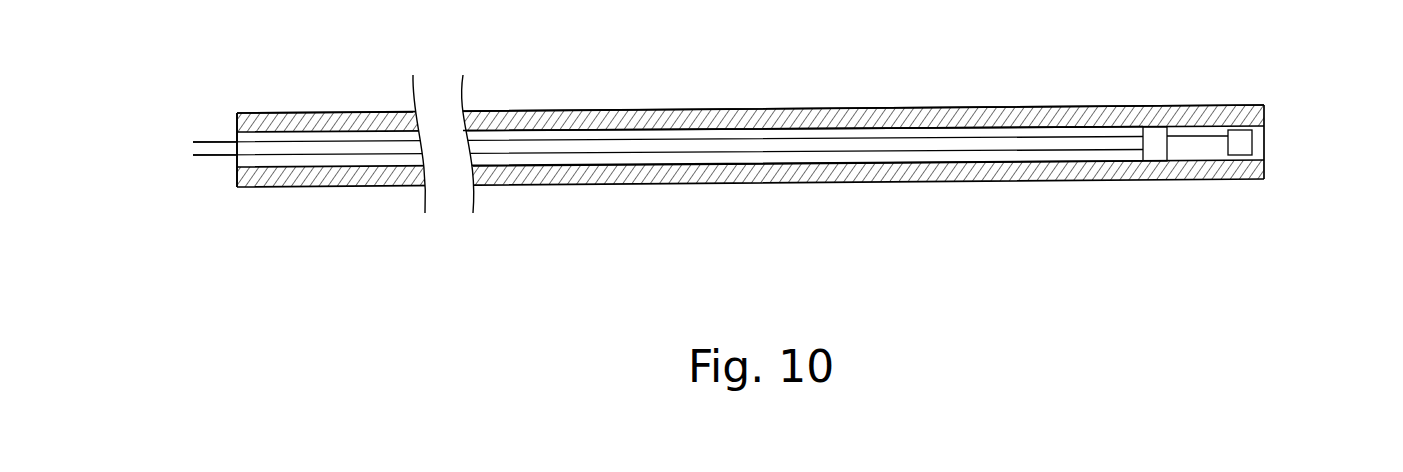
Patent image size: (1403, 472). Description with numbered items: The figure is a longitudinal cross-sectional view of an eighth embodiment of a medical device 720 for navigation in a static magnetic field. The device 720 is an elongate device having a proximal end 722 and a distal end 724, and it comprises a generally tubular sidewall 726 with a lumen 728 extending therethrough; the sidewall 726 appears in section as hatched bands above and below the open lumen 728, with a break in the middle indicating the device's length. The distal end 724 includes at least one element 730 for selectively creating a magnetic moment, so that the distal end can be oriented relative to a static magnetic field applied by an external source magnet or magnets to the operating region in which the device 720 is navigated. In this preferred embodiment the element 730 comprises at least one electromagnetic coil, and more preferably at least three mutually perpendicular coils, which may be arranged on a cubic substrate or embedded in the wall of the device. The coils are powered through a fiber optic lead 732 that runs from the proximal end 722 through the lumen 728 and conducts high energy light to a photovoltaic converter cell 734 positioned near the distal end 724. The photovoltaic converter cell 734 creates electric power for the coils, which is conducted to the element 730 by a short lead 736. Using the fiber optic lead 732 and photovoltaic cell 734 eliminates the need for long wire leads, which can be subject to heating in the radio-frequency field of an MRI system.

The medical device 720 is at (870, 252).
The proximal end 722 is at (219, 186).
The distal end 724 is at (1277, 113).
The tubular sidewall 726 is at (872, 107).
The lumen 728 is at (930, 155).
The element for selectively creating a magnetic moment 730 is at (1240, 147).
The fiber optic lead 732 is at (1018, 149).
The photovoltaic converter cell 734 is at (1152, 128).
The short lead 736 is at (1194, 136).